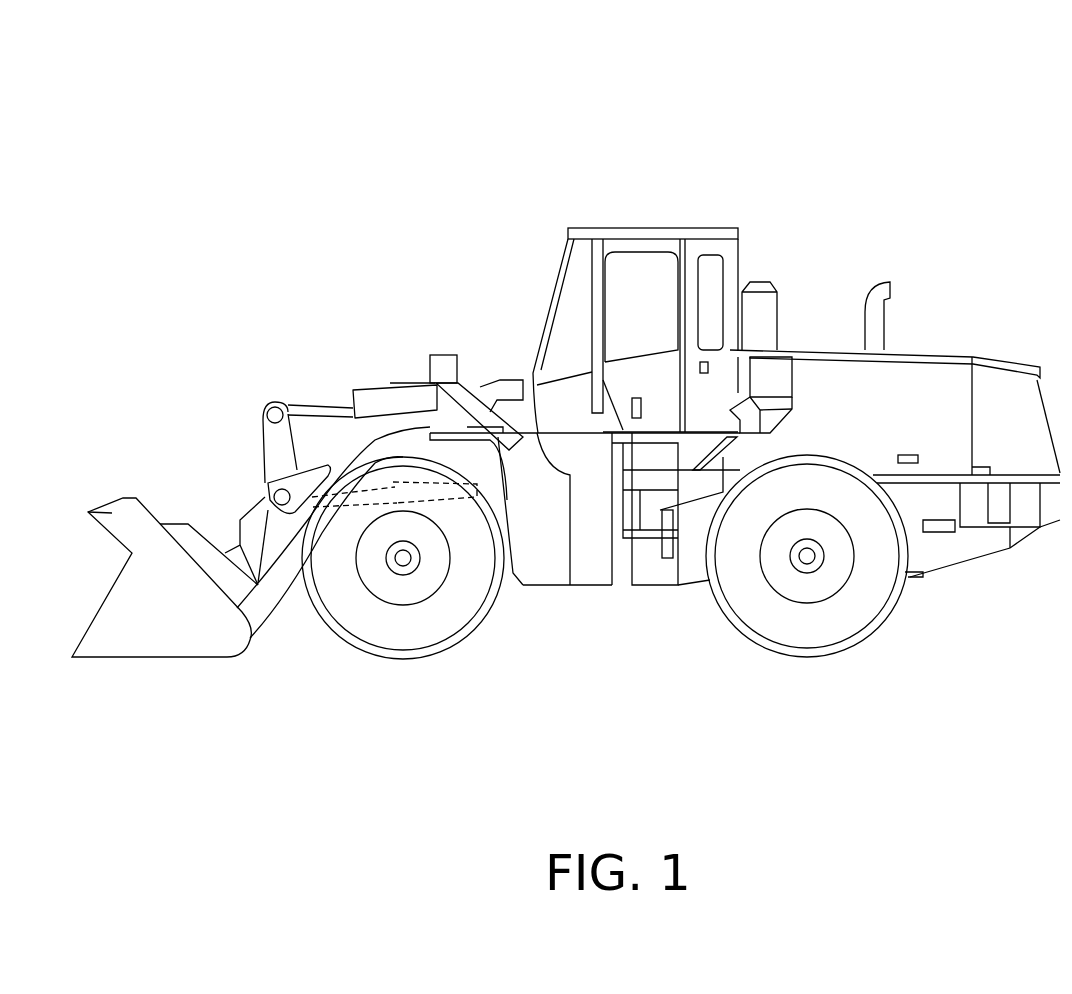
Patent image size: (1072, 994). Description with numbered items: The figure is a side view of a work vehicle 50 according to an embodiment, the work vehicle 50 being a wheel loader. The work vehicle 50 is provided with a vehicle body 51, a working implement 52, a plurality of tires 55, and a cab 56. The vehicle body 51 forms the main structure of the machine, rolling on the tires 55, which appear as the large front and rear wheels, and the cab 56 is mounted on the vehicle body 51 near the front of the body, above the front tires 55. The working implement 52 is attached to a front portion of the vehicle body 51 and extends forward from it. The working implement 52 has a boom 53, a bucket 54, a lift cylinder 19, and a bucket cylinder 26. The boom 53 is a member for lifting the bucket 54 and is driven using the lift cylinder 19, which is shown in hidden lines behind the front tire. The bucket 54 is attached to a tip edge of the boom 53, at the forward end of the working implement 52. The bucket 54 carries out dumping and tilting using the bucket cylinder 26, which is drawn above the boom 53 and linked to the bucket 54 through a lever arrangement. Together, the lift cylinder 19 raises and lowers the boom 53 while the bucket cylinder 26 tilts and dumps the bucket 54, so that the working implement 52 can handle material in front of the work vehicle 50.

The work vehicle 50 is at (988, 112).
The vehicle body 51 is at (818, 300).
The working implement 52 is at (176, 370).
The boom 53 is at (347, 450).
The bucket 54 is at (99, 511).
The tires 55 is at (412, 637).
The cab 56 is at (662, 214).
The bucket cylinder 26 is at (302, 413).
The lift cylinder 19 is at (397, 480).